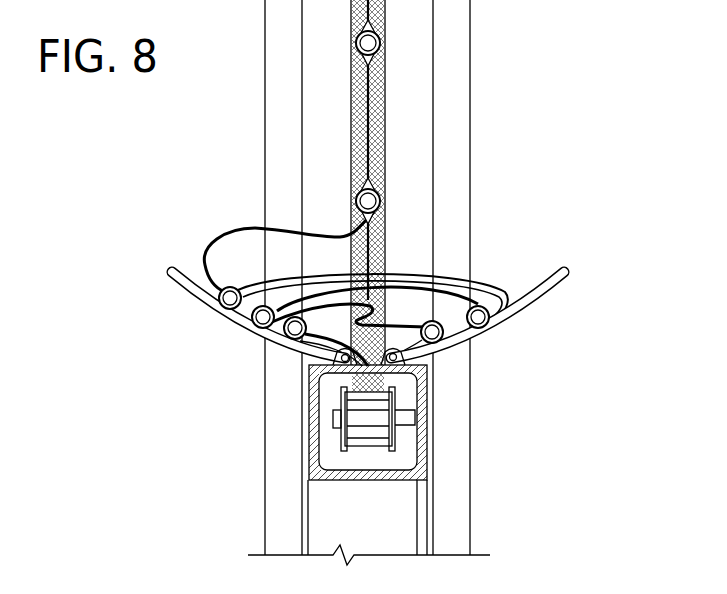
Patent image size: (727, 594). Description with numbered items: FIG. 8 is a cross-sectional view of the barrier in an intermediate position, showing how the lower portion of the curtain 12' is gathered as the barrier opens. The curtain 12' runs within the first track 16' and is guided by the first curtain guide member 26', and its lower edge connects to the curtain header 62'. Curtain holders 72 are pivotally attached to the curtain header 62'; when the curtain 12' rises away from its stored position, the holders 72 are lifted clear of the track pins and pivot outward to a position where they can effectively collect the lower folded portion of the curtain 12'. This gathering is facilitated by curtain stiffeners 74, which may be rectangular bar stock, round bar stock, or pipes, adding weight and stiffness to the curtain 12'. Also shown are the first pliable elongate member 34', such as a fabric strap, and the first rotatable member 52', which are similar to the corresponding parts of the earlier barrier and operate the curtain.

The first track 16' is at (351, 282).
The curtain 12' is at (399, 183).
The first pliable elongate member 34' is at (378, 230).
The curtain stiffeners 74 is at (383, 212).
The curtain holders 72 is at (185, 300).
The first rotatable member 52' is at (305, 419).
The first curtain guide member 26' is at (362, 449).
The curtain header 62' is at (367, 517).